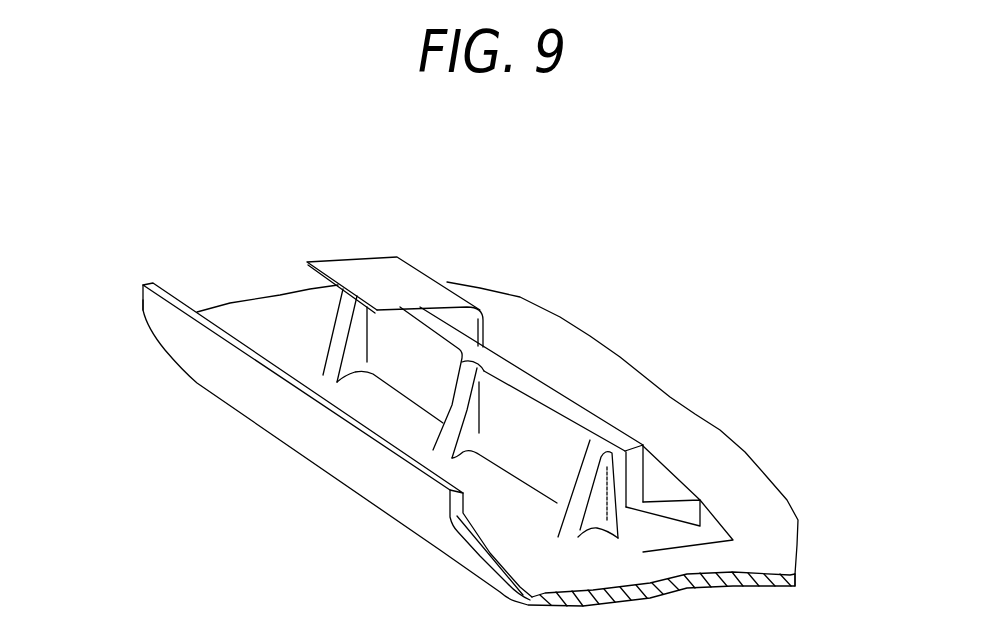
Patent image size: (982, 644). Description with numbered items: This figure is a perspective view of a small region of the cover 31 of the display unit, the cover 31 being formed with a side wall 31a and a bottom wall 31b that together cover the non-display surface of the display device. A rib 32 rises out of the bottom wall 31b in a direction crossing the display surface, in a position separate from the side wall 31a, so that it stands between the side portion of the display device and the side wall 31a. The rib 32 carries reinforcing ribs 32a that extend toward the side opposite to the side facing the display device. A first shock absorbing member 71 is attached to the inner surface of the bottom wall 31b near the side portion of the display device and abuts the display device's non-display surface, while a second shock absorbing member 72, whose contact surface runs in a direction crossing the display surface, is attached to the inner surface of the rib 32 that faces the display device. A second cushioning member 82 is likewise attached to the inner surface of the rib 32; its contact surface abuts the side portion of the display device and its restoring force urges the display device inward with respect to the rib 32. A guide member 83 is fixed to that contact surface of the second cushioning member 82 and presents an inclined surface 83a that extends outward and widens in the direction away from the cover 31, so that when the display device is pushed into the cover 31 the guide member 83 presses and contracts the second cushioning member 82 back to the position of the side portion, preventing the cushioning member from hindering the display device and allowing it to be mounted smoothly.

The cover 31 is at (771, 474).
The side wall 31a is at (173, 333).
The bottom wall 31b is at (773, 547).
The rib 32 is at (417, 392).
The reinforcing rib 32a is at (340, 339).
The first shock absorbing member 71 is at (673, 492).
The second shock absorbing member 72 is at (583, 408).
The second cushioning member 82 is at (470, 333).
The guide member 83 is at (459, 259).
The inclined surface 83a is at (361, 270).